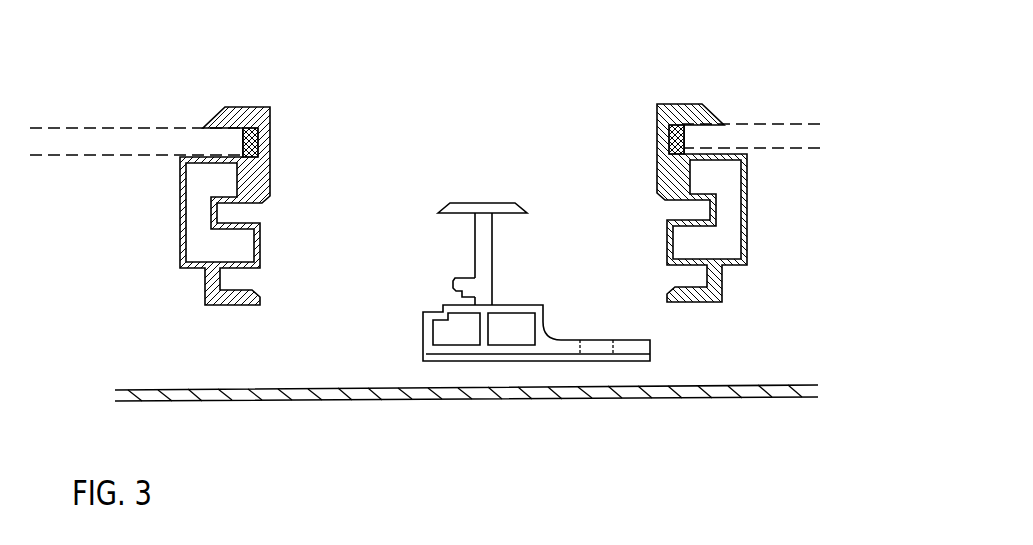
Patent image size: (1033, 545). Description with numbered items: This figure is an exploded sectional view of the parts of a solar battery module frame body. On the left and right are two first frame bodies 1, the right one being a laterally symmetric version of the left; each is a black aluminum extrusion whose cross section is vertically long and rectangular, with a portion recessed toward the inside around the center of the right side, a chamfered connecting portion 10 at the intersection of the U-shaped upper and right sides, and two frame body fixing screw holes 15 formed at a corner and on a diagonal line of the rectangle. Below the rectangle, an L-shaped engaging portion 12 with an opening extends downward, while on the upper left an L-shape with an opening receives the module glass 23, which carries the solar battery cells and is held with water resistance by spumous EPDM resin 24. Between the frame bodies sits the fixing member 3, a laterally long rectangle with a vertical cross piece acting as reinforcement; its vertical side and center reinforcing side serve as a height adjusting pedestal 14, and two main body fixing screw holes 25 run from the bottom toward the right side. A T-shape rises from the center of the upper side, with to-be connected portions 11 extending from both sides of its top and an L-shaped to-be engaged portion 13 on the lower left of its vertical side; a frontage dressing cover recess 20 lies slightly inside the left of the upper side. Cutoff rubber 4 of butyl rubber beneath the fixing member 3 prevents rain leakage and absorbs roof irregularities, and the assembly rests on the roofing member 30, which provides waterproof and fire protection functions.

The first frame body 1 is at (237, 105).
The fixing member 3 is at (476, 224).
The cutoff rubber 4 is at (494, 371).
The connecting portion 10 is at (256, 225).
The to-be connected portion 11 is at (453, 210).
The engaging portion 12 is at (242, 306).
The to-be engaged portion 13 is at (455, 280).
The height adjusting pedestal 14 is at (427, 325).
The frame body fixing screw hole 15 is at (253, 163).
The frontage dressing cover recess 20 is at (435, 297).
The module glass 23 is at (147, 143).
The spumous EPDM resin 24 is at (263, 120).
The main body fixing screw hole 25 is at (600, 344).
The roofing member 30 is at (683, 388).